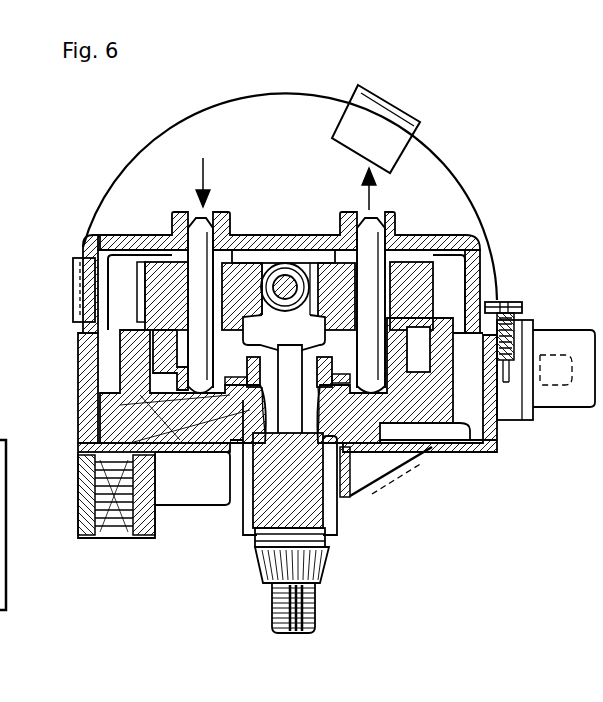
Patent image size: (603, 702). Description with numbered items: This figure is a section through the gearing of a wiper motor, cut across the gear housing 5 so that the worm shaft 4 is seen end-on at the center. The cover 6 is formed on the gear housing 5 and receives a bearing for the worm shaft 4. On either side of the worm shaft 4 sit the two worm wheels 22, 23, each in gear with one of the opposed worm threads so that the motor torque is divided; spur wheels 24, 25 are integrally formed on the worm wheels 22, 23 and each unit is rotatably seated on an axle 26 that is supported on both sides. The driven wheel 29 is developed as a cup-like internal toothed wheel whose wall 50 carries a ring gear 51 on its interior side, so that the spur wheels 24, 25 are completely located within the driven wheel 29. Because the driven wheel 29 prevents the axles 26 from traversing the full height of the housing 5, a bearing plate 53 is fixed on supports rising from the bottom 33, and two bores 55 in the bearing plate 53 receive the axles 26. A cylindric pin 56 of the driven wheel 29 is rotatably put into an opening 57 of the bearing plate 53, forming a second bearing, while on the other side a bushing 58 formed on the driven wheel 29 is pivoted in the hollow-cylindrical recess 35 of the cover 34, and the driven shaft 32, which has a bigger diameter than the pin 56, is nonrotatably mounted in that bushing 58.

The worm shaft 4 is at (268, 256).
The gear housing 5 is at (85, 385).
The cover 6 is at (203, 116).
The worm wheel 22 is at (470, 240).
The worm wheel 23 is at (160, 292).
The spur wheel 24 is at (525, 307).
The spur wheel 25 is at (177, 348).
The axle 26 is at (228, 234).
The driven wheel 29 is at (430, 413).
The driven shaft 32 is at (328, 537).
The bottom 33 is at (415, 289).
The cover 34 is at (463, 452).
The hollow-cylindrical recess 35 is at (243, 540).
The wall 50 is at (140, 403).
The ring gear 51 is at (78, 443).
The bearing plate 53 is at (222, 455).
The bore 55 is at (215, 410).
The cylindric pin 56 is at (350, 480).
The opening 57 is at (240, 500).
The bushing 58 is at (260, 550).